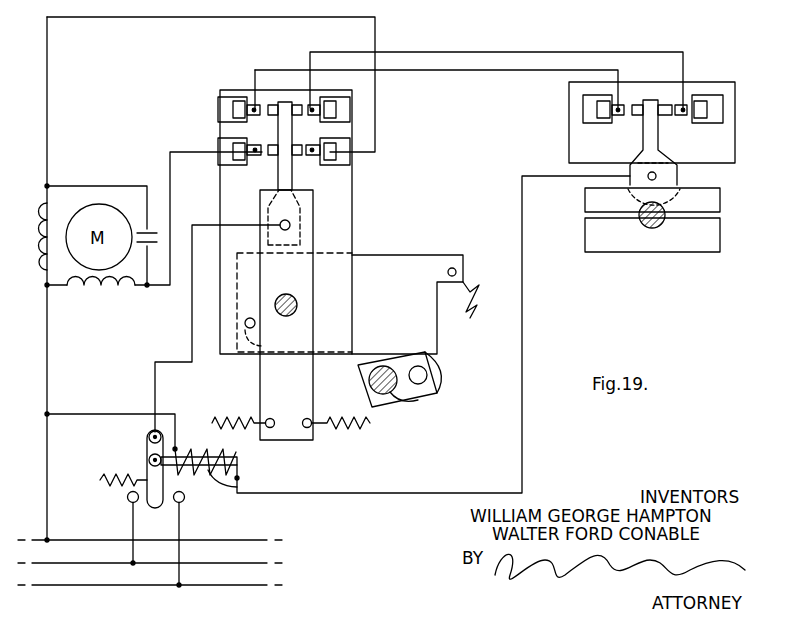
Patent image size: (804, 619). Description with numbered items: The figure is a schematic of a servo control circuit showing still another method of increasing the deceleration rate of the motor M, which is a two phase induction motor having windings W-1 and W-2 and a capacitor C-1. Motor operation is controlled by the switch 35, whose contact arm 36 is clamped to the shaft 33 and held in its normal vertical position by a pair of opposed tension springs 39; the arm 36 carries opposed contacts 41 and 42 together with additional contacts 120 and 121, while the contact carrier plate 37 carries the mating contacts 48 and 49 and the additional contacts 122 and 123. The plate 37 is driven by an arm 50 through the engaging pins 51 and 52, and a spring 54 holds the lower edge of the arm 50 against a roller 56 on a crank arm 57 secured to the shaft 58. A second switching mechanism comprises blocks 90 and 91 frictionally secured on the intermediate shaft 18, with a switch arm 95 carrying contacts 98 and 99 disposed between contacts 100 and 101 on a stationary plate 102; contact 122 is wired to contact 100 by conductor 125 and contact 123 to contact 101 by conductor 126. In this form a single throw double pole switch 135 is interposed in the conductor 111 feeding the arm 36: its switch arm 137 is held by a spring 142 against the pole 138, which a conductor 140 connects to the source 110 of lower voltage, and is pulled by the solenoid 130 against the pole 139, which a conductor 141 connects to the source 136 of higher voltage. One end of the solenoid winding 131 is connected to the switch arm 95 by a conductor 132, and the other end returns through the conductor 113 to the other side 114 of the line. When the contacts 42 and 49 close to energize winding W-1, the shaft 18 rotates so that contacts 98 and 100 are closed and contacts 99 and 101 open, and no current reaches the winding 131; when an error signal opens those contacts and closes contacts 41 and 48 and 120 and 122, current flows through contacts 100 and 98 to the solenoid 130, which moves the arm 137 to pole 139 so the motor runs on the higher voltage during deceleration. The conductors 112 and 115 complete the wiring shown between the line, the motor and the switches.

The intermediate shaft 18 is at (655, 228).
The shaft 33 is at (285, 297).
The switch 35 is at (364, 243).
The contact arm 36 is at (306, 293).
The contact carrier plate 37 is at (352, 216).
The tension springs 39 is at (351, 445).
The contact 41 is at (271, 158).
The contact 42 is at (300, 160).
The contact 48 is at (258, 168).
The contact 49 is at (340, 170).
The arm 50 is at (413, 260).
The pin 51 is at (297, 316).
The pin 52 is at (245, 323).
The spring 54 is at (478, 296).
The roller 56 is at (443, 367).
The crank arm 57 is at (386, 372).
The shaft 58 is at (406, 399).
The block 90 is at (712, 203).
The block 91 is at (712, 240).
The switch arm 95 is at (677, 177).
The contact 98 is at (641, 105).
The contact 99 is at (660, 120).
The contact 100 is at (622, 123).
The contact 101 is at (682, 122).
The stationary plate 102 is at (569, 148).
The source of lower voltage 110 is at (116, 568).
The conductor 111 is at (153, 389).
The conductor 112 is at (160, 22).
The conductor 113 is at (49, 374).
The side of the line 114 is at (237, 541).
The conductor 115 is at (170, 152).
The contact 120 is at (268, 105).
The contact 121 is at (296, 100).
The contact 122 is at (245, 124).
The contact 123 is at (330, 128).
The conductor 125 is at (463, 72).
The conductor 126 is at (515, 52).
The solenoid 130 is at (195, 438).
The solenoid winding 131 is at (241, 479).
The conductor 132 is at (523, 450).
The single throw double pole switch 135 is at (143, 441).
The source of higher voltage 136 is at (210, 588).
The switch arm 137 is at (163, 478).
The pole 138 is at (127, 497).
The pole 139 is at (186, 500).
The conductor 140 is at (131, 524).
The conductor 141 is at (182, 529).
The spring 142 is at (128, 474).
The capacitor C-1 is at (160, 232).
The winding W-1 is at (40, 270).
The winding W-2 is at (105, 298).